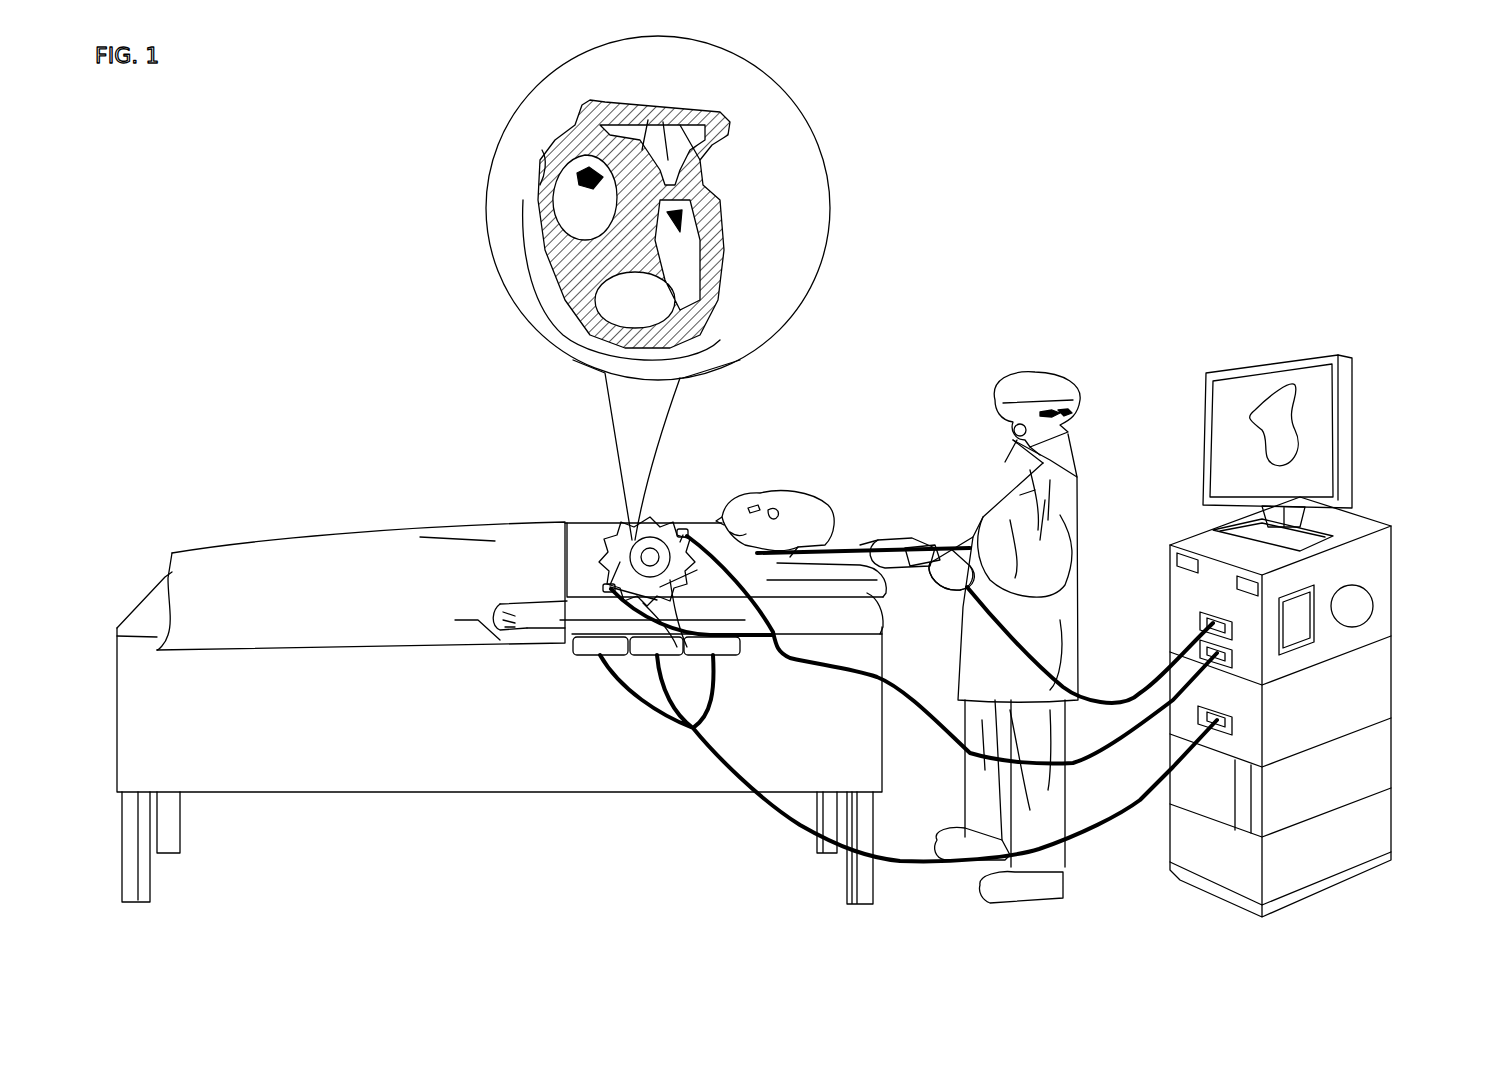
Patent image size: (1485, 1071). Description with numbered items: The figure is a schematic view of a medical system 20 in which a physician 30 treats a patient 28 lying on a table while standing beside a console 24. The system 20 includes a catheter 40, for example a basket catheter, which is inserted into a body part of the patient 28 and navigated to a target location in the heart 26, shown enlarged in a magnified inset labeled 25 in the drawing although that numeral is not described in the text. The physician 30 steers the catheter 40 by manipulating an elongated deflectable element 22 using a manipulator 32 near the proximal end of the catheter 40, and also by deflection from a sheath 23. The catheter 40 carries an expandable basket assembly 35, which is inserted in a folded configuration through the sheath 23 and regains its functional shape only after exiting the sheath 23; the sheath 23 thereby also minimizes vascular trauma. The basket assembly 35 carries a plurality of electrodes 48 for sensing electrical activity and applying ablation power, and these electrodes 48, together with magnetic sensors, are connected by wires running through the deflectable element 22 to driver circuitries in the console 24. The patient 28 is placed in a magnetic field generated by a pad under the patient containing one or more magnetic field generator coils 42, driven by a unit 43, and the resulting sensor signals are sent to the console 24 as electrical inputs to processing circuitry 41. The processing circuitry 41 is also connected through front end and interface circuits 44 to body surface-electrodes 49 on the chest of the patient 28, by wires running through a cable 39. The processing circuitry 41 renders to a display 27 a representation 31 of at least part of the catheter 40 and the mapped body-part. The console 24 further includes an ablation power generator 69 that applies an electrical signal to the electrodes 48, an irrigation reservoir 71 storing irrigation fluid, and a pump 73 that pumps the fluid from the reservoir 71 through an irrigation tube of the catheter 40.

The medical system 20 is at (1230, 200).
The elongated deflectable element 22 is at (1117, 697).
The sheath 23 is at (860, 545).
The console 24 is at (1425, 358).
The heart 25 is at (486, 182).
The heart 26 is at (625, 540).
The display 27 is at (1356, 385).
The patient 28 is at (795, 492).
The physician 30 is at (1068, 373).
The representation 31 is at (1280, 372).
The manipulator 32 is at (935, 546).
The expandable basket assembly 35 is at (592, 177).
The cable 39 is at (923, 725).
The catheter 40 is at (542, 150).
The processing circuitry 41 is at (1391, 745).
The magnetic field generator coils 42 is at (582, 657).
The unit 43 is at (1391, 670).
The front end and interface circuits 44 is at (1168, 588).
The electrodes 48 is at (603, 181).
The body surface-electrodes 49 is at (603, 586).
The ablation power generator 69 is at (1395, 577).
The irrigation reservoir 71 is at (1296, 596).
The pump 73 is at (1373, 607).